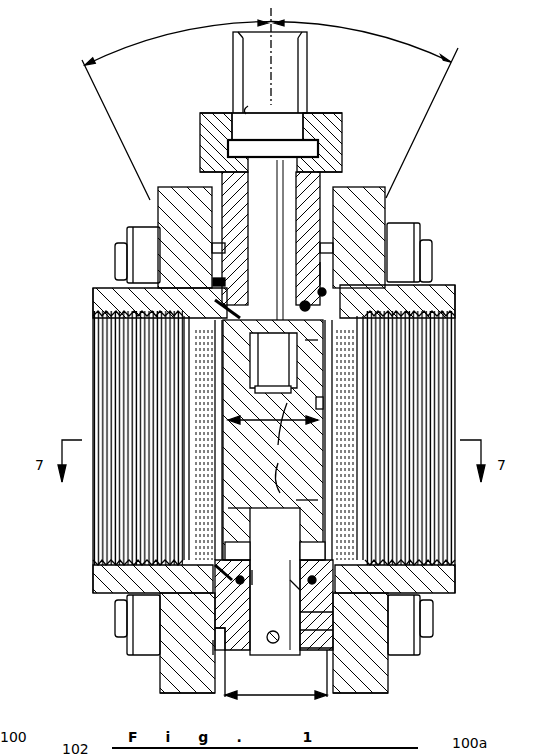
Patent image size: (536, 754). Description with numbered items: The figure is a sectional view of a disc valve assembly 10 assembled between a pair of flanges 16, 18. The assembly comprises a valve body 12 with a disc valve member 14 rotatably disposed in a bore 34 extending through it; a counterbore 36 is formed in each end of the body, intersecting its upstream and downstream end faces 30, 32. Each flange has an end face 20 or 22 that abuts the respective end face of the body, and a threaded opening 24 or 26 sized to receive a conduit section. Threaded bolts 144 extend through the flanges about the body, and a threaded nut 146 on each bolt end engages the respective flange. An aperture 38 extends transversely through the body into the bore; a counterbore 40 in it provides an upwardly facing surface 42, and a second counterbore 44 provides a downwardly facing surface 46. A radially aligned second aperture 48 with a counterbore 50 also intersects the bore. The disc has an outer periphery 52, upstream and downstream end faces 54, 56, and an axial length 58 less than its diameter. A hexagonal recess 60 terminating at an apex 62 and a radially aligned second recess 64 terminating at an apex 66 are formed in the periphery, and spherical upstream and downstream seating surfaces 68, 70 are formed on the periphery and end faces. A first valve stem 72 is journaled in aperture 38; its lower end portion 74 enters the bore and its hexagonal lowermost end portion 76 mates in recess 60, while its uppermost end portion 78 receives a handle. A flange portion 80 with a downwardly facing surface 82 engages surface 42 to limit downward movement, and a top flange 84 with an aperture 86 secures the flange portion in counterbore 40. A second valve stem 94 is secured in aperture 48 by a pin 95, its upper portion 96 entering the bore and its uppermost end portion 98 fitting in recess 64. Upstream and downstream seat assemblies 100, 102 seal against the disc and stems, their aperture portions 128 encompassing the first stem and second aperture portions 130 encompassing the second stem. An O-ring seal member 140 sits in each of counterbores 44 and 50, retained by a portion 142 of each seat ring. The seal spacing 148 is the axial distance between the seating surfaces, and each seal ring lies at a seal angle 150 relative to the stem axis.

The disc valve assembly 10 is at (347, 110).
The valve body 12 is at (248, 652).
The disc valve member 14 is at (312, 441).
The flange 16 is at (170, 690).
The flange 18 is at (390, 684).
The end face 20 is at (214, 685).
The end face 22 is at (340, 672).
The threaded opening 24 is at (125, 556).
The threaded opening 26 is at (425, 551).
The upstream end face 30 is at (222, 612).
The downstream end face 32 is at (330, 596).
The bore 34 is at (214, 576).
The counterbore 36 is at (226, 588).
The aperture 38 is at (332, 190).
The counterbore 40 is at (318, 160).
The upwardly facing surface 42 is at (200, 122).
The second counterbore 44 is at (214, 282).
The downwardly facing surface 46 is at (326, 268).
The second aperture 48 is at (326, 631).
The counterbore 50 is at (215, 651).
The outer periphery 52 is at (312, 308).
The upstream end face 54 is at (220, 446).
The downstream end face 56 is at (338, 372).
The axial length 58 is at (276, 446).
The recess 60 is at (250, 370).
The apex 62 is at (323, 403).
The second recess 64 is at (233, 517).
The apex 66 is at (292, 474).
The upstream seating surface 68 is at (212, 340).
The downstream seating surface 70 is at (342, 546).
The first valve stem 72 is at (236, 164).
The lower end portion 74 is at (258, 201).
The lowermost end portion 76 is at (318, 346).
The uppermost end portion 78 is at (290, 60).
The flange portion 80 is at (228, 147).
The downwardly facing surface 82 is at (267, 126).
The top flange 84 is at (318, 112).
The aperture 86 is at (246, 108).
The second valve stem 94 is at (279, 643).
The pin 95 is at (330, 650).
The upper portion 96 is at (330, 613).
The uppermost end portion 98 is at (302, 498).
The upstream seat assembly 100 is at (225, 552).
The downstream seat assembly 102 is at (325, 535).
The aperture portion 128 is at (216, 304).
The second aperture portion 130 is at (256, 575).
The O-ring seal member 140 is at (213, 252).
The portion of seat ring 142 is at (328, 293).
The threaded bolt 144 is at (118, 262).
The threaded nut 146 is at (135, 240).
The seal spacing 148 is at (292, 680).
The seal angle 150 is at (160, 47).